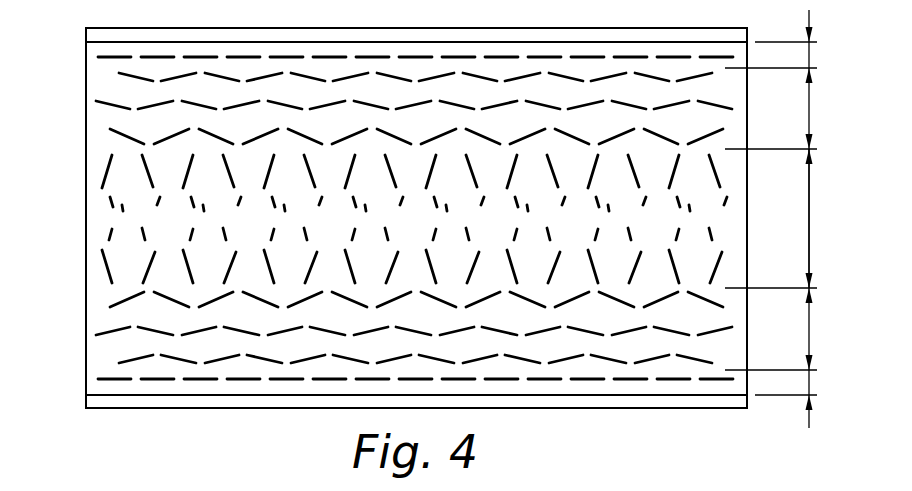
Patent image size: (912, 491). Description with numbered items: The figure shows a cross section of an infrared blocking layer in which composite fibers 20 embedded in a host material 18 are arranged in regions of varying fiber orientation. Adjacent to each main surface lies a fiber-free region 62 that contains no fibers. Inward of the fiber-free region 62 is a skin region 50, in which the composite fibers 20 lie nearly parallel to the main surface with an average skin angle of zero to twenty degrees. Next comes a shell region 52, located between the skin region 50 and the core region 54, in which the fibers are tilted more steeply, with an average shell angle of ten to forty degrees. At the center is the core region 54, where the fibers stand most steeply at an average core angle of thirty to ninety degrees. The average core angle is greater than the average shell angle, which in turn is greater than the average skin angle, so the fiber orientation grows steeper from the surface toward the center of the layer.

The fiber-free region 62 is at (102, 35).
The host material 18 is at (103, 143).
The composite fiber 20 is at (102, 267).
The skin region 50 is at (786, 218).
The shell region 52 is at (786, 219).
The core region 54 is at (827, 218).